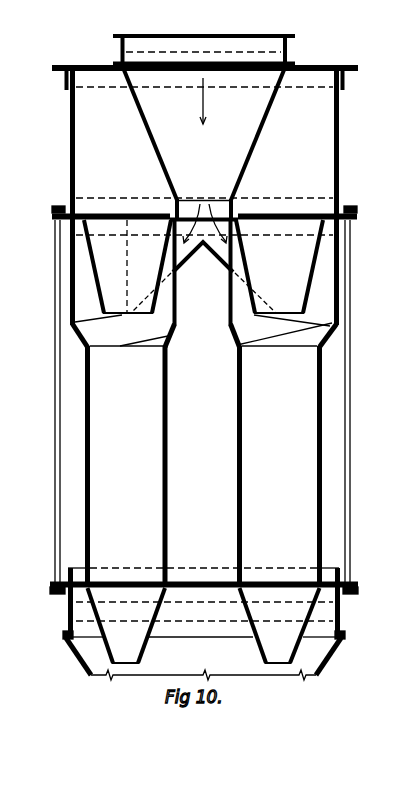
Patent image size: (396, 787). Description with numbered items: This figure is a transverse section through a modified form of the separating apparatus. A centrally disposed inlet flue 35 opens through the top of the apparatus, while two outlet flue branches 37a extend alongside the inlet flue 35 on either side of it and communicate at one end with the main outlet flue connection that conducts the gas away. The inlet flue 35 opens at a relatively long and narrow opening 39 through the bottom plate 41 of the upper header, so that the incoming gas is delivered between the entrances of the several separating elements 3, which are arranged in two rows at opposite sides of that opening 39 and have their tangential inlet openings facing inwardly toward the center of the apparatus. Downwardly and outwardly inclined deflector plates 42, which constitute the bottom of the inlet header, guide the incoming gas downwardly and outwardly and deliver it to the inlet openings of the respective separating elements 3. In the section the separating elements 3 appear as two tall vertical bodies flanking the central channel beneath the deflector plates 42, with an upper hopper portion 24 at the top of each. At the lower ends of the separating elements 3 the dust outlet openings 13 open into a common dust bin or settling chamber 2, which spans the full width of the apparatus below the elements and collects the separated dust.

The dust bin 2 is at (71, 651).
The separating elements 3 is at (237, 378).
The dust outlet opening 13 is at (282, 665).
The hoppers 24 is at (93, 264).
The inlet flue 35 is at (153, 137).
The outlet flue branches 37a is at (204, 138).
The opening 39 is at (183, 212).
The bottom plate 41 is at (73, 194).
The deflector plates 42 is at (220, 262).